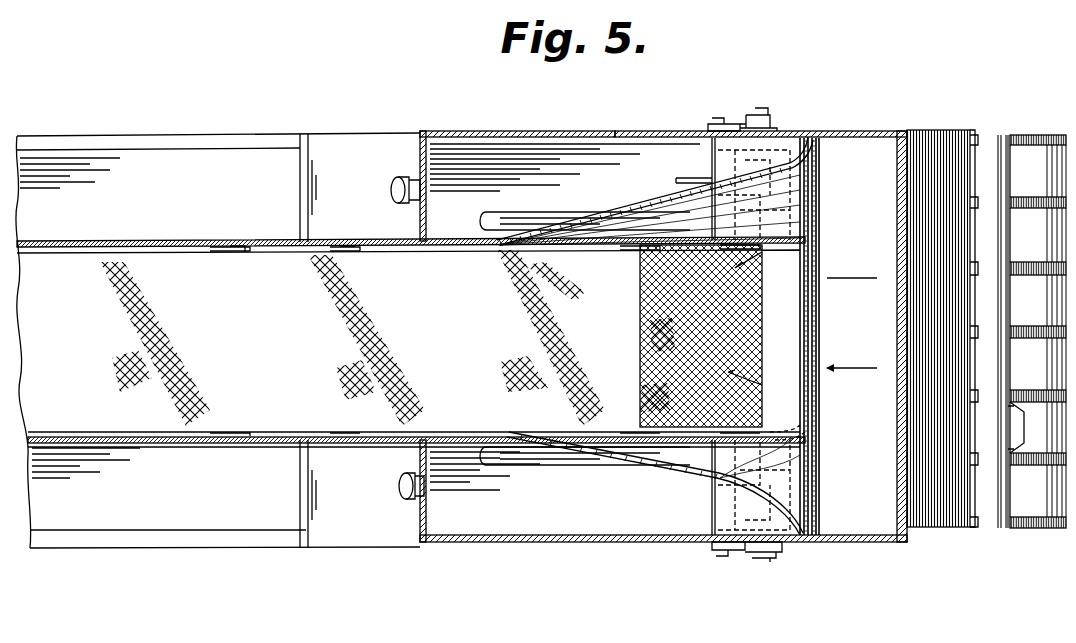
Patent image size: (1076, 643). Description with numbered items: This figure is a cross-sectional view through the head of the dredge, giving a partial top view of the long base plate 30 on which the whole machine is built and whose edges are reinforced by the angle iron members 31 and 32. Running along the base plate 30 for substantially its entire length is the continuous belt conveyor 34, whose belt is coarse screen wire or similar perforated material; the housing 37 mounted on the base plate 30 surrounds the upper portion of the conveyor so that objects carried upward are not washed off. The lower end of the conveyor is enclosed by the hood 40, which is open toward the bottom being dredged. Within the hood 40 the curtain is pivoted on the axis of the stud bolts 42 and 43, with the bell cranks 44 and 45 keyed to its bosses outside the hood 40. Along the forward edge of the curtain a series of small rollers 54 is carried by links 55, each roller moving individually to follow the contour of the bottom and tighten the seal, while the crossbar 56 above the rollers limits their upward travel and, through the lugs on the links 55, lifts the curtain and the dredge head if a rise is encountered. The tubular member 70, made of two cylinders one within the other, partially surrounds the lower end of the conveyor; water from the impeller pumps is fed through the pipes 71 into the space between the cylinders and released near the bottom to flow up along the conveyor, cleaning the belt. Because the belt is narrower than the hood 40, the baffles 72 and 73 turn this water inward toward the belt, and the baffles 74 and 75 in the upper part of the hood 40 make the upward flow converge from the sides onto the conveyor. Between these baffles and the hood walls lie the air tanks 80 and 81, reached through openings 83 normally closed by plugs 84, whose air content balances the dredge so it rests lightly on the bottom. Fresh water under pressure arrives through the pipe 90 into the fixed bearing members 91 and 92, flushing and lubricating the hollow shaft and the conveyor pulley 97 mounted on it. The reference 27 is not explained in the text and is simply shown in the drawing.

The conveyor assembly 27 is at (592, 129).
The base plate 30 is at (248, 172).
The angle iron member 31 is at (142, 140).
The angle iron member 32 is at (160, 542).
The continuous belt conveyor 34 is at (431, 336).
The housing 37 is at (64, 242).
The hood 40 is at (544, 132).
The stud bolt 42 is at (770, 554).
The stud bolt 43 is at (762, 116).
The bell crank 44 is at (730, 552).
The bell crank 45 is at (718, 130).
The rollers 54 is at (1032, 166).
The links 55 is at (1016, 444).
The crossbar 56 is at (978, 162).
The tubular member 70 is at (814, 135).
The pipes 71 is at (514, 222).
The baffle 72 is at (870, 178).
The baffle 73 is at (800, 470).
The baffle 74 is at (711, 482).
The baffle 75 is at (687, 196).
The air tank 80 is at (490, 512).
The air tank 81 is at (480, 165).
The openings 83 is at (420, 196).
The plugs 84 is at (396, 185).
The pipe 90 is at (678, 180).
The fixed bearing member 91 is at (725, 222).
The fixed bearing member 92 is at (727, 455).
The conveyor pulley 97 is at (872, 470).